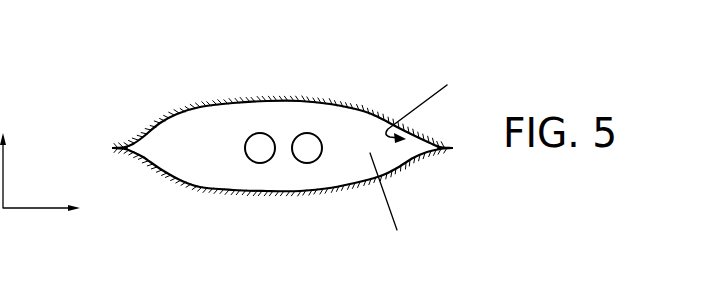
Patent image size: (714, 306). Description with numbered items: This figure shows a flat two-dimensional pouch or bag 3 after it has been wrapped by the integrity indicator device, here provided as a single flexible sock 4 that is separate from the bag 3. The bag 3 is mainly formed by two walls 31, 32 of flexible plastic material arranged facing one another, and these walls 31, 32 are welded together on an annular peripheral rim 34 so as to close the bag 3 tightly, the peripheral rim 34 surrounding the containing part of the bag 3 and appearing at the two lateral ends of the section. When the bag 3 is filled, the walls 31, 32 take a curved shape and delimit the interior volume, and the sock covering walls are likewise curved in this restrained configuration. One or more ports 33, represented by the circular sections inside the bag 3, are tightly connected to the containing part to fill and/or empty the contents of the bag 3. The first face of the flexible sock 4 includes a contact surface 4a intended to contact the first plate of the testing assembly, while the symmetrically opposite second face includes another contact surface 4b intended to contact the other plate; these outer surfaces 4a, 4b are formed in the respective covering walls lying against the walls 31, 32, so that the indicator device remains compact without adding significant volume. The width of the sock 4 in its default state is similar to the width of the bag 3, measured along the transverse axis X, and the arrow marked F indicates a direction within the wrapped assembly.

The bag 3 is at (425, 107).
The flexible sock 4 is at (280, 152).
The contact surface 4a is at (282, 91).
The contact surface 4b is at (282, 211).
The wall 31 is at (337, 104).
The wall 32 is at (305, 193).
The ports 33 is at (260, 148).
The peripheral rim 34 is at (125, 145).
The force direction F is at (387, 206).
The transverse axis X is at (44, 187).